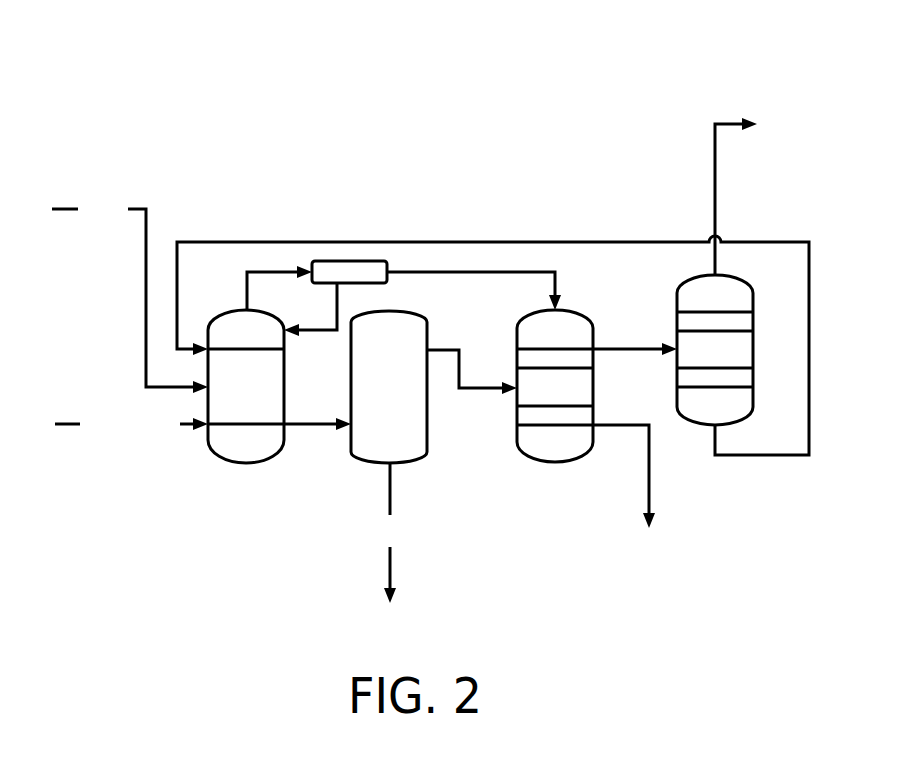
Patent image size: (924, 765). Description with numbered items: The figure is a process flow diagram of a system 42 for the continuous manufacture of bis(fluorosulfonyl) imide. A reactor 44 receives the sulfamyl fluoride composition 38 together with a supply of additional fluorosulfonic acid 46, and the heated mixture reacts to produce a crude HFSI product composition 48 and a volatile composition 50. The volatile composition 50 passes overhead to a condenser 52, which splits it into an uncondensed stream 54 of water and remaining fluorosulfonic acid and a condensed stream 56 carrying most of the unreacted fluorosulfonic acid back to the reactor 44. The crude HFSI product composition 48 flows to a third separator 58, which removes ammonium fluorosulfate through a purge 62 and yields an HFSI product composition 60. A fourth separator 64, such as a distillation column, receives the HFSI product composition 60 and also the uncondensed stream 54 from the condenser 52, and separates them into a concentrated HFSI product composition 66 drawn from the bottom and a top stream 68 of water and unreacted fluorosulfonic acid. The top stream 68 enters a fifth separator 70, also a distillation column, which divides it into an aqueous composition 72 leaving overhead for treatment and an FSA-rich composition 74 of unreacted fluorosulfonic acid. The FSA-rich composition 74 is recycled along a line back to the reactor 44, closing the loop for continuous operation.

The sulfamyl fluoride composition 38 is at (183, 427).
The system 42 is at (86, 88).
The reactor 44 is at (247, 463).
The additional fluorosulfonic acid 46 is at (146, 209).
The crude HFSI product composition 48 is at (300, 425).
The volatile composition 50 is at (257, 272).
The condenser 52 is at (346, 261).
The uncondensed stream 54 is at (427, 272).
The condensed stream 56 is at (327, 330).
The third separator 58 is at (368, 462).
The HFSI product composition 60 is at (470, 392).
The purge 62 is at (392, 565).
The fourth separator 64 is at (555, 462).
The concentrated HFSI product composition 66 is at (651, 480).
The top stream 68 is at (618, 349).
The fifth separator 70 is at (753, 368).
The aqueous composition 72 is at (713, 150).
The FSA-rich composition 74 is at (520, 240).